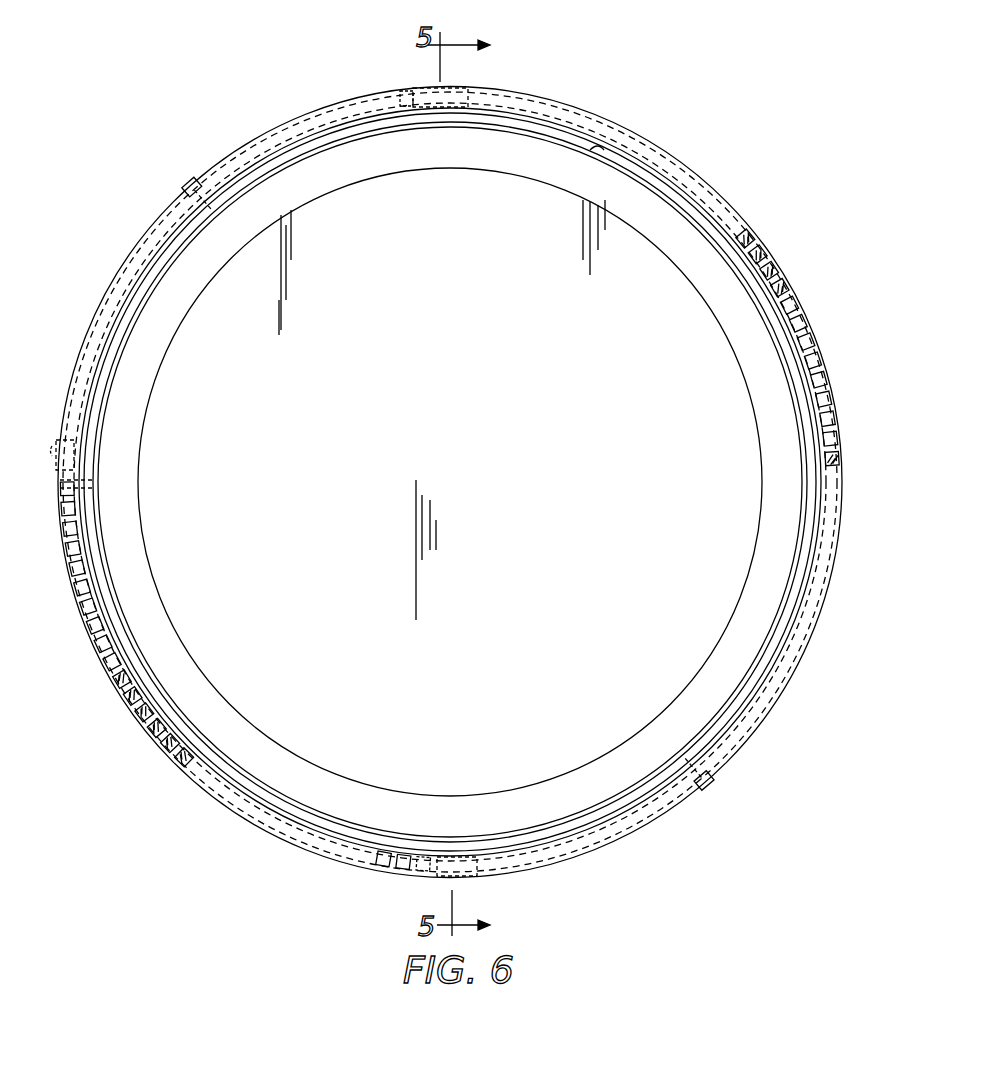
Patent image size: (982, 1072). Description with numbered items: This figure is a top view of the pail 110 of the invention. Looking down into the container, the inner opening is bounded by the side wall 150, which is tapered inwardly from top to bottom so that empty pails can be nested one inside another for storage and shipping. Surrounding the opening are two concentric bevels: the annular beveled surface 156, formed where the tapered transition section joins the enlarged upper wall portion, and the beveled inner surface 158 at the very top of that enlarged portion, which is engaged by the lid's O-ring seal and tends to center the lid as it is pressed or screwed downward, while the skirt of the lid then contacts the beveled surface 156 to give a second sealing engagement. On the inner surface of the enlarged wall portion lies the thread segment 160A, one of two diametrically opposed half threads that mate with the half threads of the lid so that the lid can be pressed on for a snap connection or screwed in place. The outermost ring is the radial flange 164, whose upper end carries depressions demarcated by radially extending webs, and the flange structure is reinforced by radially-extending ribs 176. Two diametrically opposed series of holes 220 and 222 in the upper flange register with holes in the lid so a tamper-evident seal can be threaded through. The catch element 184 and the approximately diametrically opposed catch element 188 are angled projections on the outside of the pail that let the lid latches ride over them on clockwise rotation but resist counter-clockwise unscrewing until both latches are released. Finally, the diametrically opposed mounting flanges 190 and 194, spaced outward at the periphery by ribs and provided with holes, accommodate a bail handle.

The container (pail) 110 is at (749, 186).
The side wall 150 is at (735, 623).
The annular beveled surface 156 is at (772, 638).
The beveled inner surface 158 is at (787, 316).
The thread segment 160A is at (318, 823).
The radial flange 164 is at (310, 852).
The radially-extending ribs 176 is at (60, 442).
The catch element 184 is at (715, 786).
The catch element 188 is at (186, 192).
The mounting flange 190 is at (446, 878).
The mounting flange 194 is at (460, 86).
The series of holes 220 is at (818, 400).
The series of holes 222 is at (107, 643).